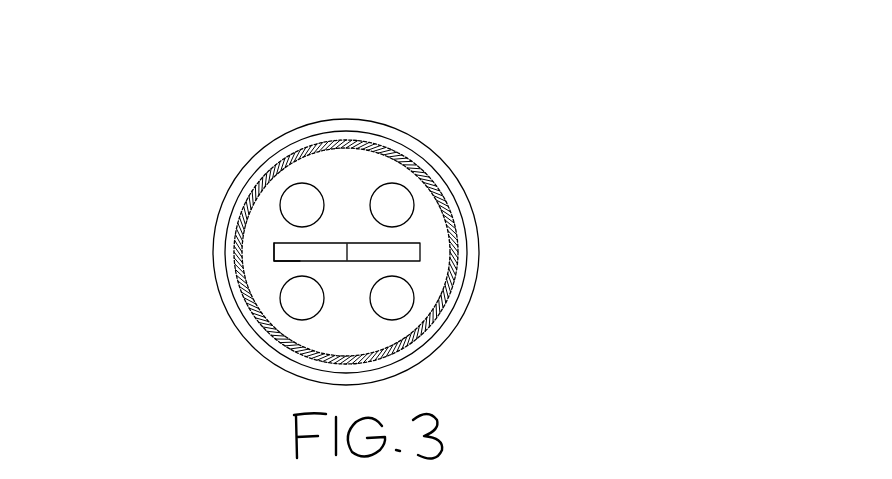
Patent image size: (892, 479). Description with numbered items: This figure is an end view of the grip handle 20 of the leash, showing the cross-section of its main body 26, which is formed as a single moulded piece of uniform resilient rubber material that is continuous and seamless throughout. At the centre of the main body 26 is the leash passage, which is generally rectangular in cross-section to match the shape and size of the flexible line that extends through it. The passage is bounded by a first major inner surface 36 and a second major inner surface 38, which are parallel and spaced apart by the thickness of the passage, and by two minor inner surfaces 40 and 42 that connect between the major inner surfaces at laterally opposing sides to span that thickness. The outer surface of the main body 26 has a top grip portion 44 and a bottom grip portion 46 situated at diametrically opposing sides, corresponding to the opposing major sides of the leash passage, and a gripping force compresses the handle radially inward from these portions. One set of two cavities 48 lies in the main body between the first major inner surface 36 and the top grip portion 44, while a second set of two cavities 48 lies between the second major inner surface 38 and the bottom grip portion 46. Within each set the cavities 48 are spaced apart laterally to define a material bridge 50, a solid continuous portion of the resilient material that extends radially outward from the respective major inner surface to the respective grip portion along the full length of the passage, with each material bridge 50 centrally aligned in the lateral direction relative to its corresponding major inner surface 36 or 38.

The grip handle 20 is at (88, 217).
The main body 26 is at (430, 237).
The first major inner surface 36 is at (349, 244).
The second major inner surface 38 is at (350, 262).
The minor inner surface 40 is at (274, 253).
The minor inner surface 42 is at (420, 250).
The top grip portion 44 is at (325, 118).
The bottom grip portion 46 is at (383, 383).
The cavities 48 is at (285, 183).
The material bridge 50 is at (349, 197).